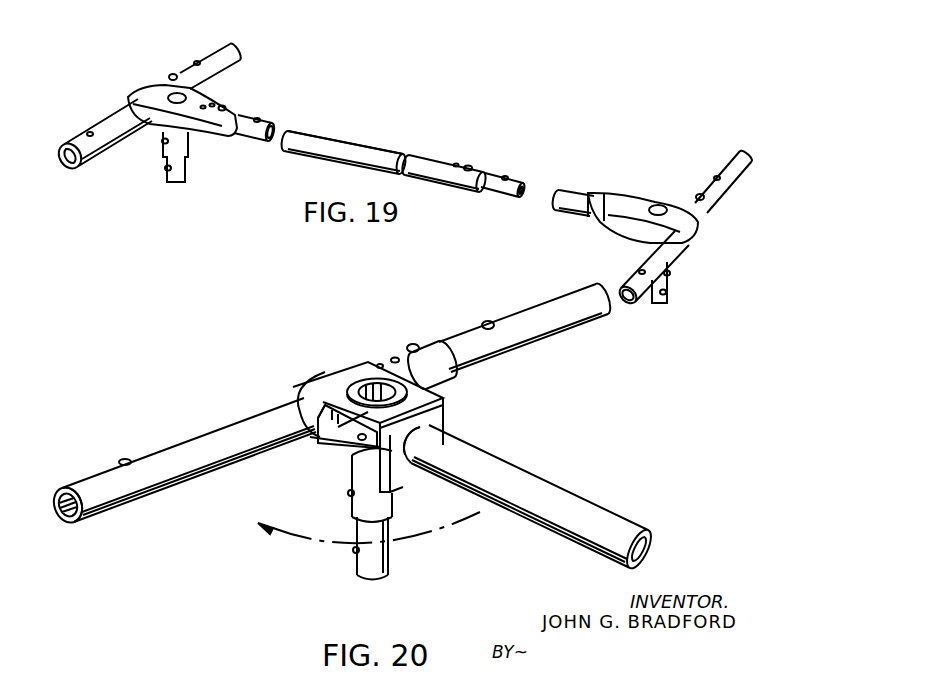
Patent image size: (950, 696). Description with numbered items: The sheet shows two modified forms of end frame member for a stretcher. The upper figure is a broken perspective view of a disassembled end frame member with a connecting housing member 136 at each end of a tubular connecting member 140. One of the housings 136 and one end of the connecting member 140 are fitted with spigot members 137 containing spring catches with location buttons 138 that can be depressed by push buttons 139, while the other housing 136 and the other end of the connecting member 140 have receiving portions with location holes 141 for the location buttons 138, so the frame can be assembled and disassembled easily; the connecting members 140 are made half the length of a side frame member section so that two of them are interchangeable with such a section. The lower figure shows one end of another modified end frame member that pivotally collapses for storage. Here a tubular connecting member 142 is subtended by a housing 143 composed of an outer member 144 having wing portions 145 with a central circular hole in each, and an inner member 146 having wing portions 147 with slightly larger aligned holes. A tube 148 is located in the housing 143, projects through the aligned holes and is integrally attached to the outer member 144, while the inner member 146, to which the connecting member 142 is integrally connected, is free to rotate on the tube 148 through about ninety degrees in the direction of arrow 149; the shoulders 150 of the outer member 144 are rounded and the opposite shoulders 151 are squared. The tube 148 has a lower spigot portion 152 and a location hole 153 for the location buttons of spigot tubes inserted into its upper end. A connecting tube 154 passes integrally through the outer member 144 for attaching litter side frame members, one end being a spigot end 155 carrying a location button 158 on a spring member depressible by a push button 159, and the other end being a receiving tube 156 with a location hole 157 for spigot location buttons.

In FIG. 19, the connecting housing member 136 is at (198, 97).
In FIG. 19, the spigot member 137 is at (248, 127).
In FIG. 19, the location button 138 is at (259, 119).
In FIG. 19, the push button 139 is at (225, 105).
In FIG. 19, the tubular connecting member 140 is at (378, 148).
In FIG. 19, the location hole 141 is at (315, 133).
In FIG. 20, the tubular connecting member 142 is at (578, 500).
In FIG. 20, the housing 143 is at (497, 408).
In FIG. 20, the outer member 144 is at (330, 375).
In FIG. 20, the wing portions 145 is at (332, 398).
In FIG. 20, the inner member 146 is at (437, 421).
In FIG. 20, the wing portions 147 is at (322, 433).
In FIG. 20, the tube 148 is at (352, 505).
In FIG. 20, the arrow 149 is at (280, 535).
In FIG. 20, the shoulders 150 is at (338, 425).
In FIG. 20, the shoulders 151 is at (450, 392).
In FIG. 20, the lower spigot portion 152 is at (357, 562).
In FIG. 20, the location hole 153 is at (361, 440).
In FIG. 20, the connecting tube 154 is at (220, 420).
In FIG. 20, the spigot end 155 is at (542, 307).
In FIG. 20, the receiving tube 156 is at (82, 475).
In FIG. 20, the location hole 157 is at (123, 459).
In FIG. 20, the location button 158 is at (487, 321).
In FIG. 20, the push button 159 is at (413, 344).